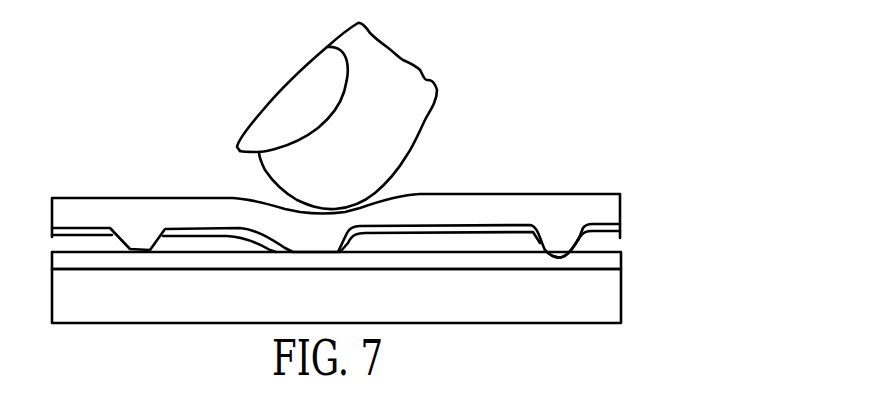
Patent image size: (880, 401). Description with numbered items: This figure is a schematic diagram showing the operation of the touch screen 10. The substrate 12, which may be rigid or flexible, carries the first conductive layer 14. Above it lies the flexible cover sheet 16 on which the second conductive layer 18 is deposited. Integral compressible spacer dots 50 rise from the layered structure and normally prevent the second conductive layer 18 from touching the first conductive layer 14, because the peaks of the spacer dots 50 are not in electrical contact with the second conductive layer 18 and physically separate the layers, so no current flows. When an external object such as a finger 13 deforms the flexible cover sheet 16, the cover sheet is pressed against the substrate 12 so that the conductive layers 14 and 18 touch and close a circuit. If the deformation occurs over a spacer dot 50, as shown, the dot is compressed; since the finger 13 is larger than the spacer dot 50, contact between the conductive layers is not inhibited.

The lamination/laminate assembly 10 is at (582, 153).
The substrate 12 is at (607, 304).
The finger 13 is at (402, 112).
The first conductive layer 14 is at (618, 262).
The flexible cover sheet 16 is at (603, 208).
The second conductive layer 18 is at (608, 230).
The integral compressible spacer dot 50 is at (565, 241).